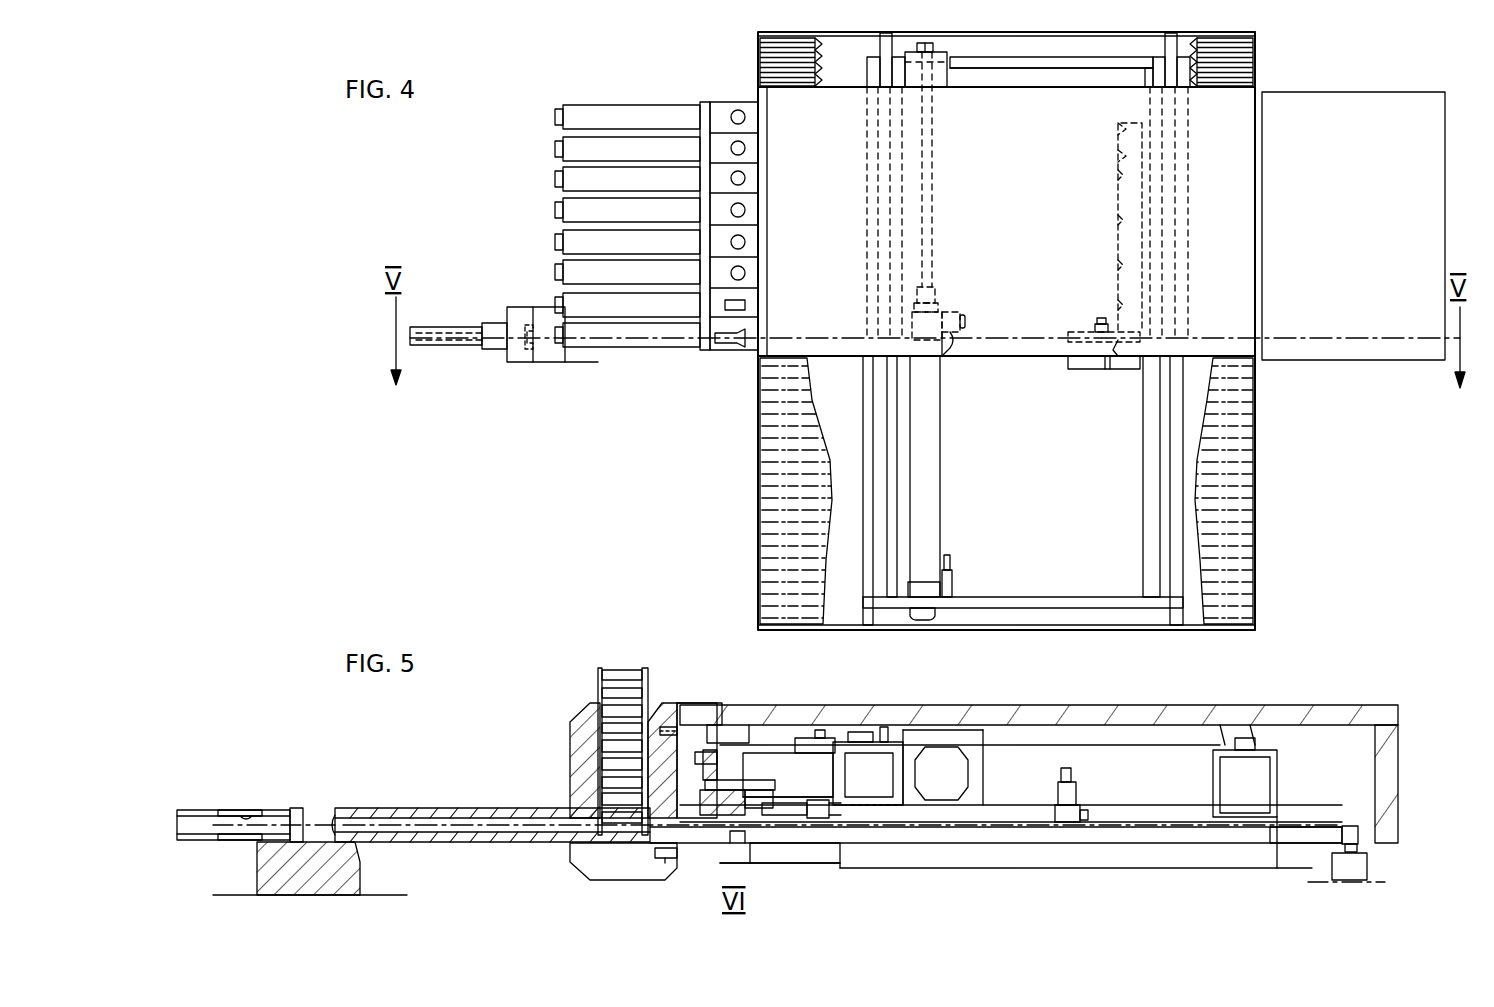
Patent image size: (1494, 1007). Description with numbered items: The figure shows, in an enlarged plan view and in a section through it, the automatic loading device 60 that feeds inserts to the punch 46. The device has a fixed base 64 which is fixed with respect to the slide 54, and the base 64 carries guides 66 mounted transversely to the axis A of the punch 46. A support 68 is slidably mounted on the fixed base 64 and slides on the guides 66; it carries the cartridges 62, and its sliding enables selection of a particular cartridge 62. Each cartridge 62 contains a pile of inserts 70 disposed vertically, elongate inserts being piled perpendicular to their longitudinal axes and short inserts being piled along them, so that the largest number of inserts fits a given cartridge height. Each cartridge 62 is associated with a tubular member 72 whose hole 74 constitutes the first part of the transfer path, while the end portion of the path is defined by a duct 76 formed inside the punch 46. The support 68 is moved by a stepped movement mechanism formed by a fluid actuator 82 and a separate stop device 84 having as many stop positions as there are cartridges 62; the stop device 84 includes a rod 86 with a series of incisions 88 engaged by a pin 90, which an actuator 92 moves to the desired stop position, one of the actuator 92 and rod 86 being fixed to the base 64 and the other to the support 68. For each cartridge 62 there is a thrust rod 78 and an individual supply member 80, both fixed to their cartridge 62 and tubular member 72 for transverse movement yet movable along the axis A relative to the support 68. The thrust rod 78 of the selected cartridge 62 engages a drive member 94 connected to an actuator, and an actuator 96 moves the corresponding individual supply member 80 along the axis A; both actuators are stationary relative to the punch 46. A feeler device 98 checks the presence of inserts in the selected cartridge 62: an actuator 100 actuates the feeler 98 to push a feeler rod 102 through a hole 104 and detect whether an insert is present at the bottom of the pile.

In FIG. 4, the punch 46 is at (460, 348).
In FIG. 5, the punch 46 is at (220, 840).
In FIG. 4, the slide 54 is at (548, 352).
In FIG. 4, the automatic loading device 60 is at (1355, 74).
In FIG. 5, the automatic loading device 60 is at (1405, 722).
In FIG. 4, the cartridge 62 is at (722, 195).
In FIG. 5, the cartridge 62 is at (648, 690).
In FIG. 4, the fixed base 64 is at (1268, 482).
In FIG. 5, the fixed base 64 is at (920, 862).
In FIG. 4, the guides 66 is at (880, 500).
In FIG. 5, the guides 66 is at (864, 738).
In FIG. 4, the support 68 is at (1225, 126).
In FIG. 5, the support 68 is at (1105, 710).
In FIG. 5, the inserts 70 is at (615, 690).
In FIG. 4, the tubular member 72 is at (610, 215).
In FIG. 5, the tubular member 72 is at (516, 842).
In FIG. 5, the hole 74 is at (448, 832).
In FIG. 5, the duct 76 is at (248, 820).
In FIG. 5, the thrust rod 78 is at (1148, 843).
In FIG. 5, the individual supply member 80 is at (699, 885).
In FIG. 4, the fluid actuator 82 is at (933, 413).
In FIG. 4, the stop device 84 is at (1095, 312).
In FIG. 4, the rod 86 is at (1118, 173).
In FIG. 4, the incisions 88 is at (1118, 160).
In FIG. 4, the pin 90 is at (1125, 372).
In FIG. 4, the actuator 92 is at (1085, 370).
In FIG. 5, the drive member 94 is at (1370, 872).
In FIG. 5, the actuator 96 is at (768, 772).
In FIG. 5, the feeler device 98 is at (805, 815).
In FIG. 5, the actuator 100 is at (1025, 822).
In FIG. 5, the feeler rod 102 is at (752, 843).
In FIG. 5, the hole 104 is at (650, 843).